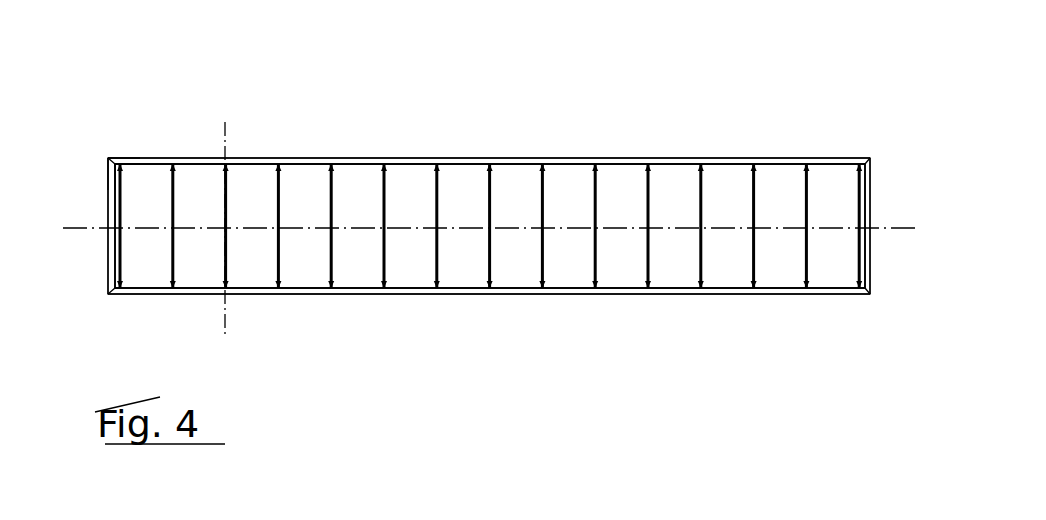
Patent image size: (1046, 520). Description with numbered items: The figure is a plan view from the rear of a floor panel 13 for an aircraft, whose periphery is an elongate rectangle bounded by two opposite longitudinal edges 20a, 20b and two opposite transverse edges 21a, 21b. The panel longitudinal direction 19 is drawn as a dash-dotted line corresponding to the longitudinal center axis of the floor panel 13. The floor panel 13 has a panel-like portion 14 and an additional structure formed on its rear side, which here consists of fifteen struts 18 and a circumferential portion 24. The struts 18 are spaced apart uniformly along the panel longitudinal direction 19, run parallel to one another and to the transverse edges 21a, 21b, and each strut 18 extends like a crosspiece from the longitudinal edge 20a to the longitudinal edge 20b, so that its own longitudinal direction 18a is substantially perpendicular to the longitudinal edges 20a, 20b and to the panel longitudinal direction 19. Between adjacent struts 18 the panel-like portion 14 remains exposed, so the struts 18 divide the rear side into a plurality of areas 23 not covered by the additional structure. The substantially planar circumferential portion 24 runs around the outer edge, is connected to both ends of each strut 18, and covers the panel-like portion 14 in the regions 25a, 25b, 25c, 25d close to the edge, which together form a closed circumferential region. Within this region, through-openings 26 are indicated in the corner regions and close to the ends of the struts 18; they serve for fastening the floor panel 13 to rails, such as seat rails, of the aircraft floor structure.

The floor panel 13 is at (660, 110).
The panel-like portion 14 is at (366, 210).
The struts 18 is at (226, 197).
The longitudinal direction of the strut 18a is at (226, 333).
The panel longitudinal direction 19 is at (889, 231).
The longitudinal edge 20a is at (294, 156).
The longitudinal edge 20b is at (341, 300).
The transverse edge 21a is at (104, 266).
The transverse edge 21b is at (878, 198).
The areas 23 is at (518, 185).
The circumferential planar portion 24 is at (134, 160).
The region close to the edge 25a is at (465, 156).
The region close to the edge 25b is at (862, 254).
The region close to the edge 25c is at (731, 294).
The region close to the edge 25d is at (104, 200).
The through-openings 26 is at (866, 153).